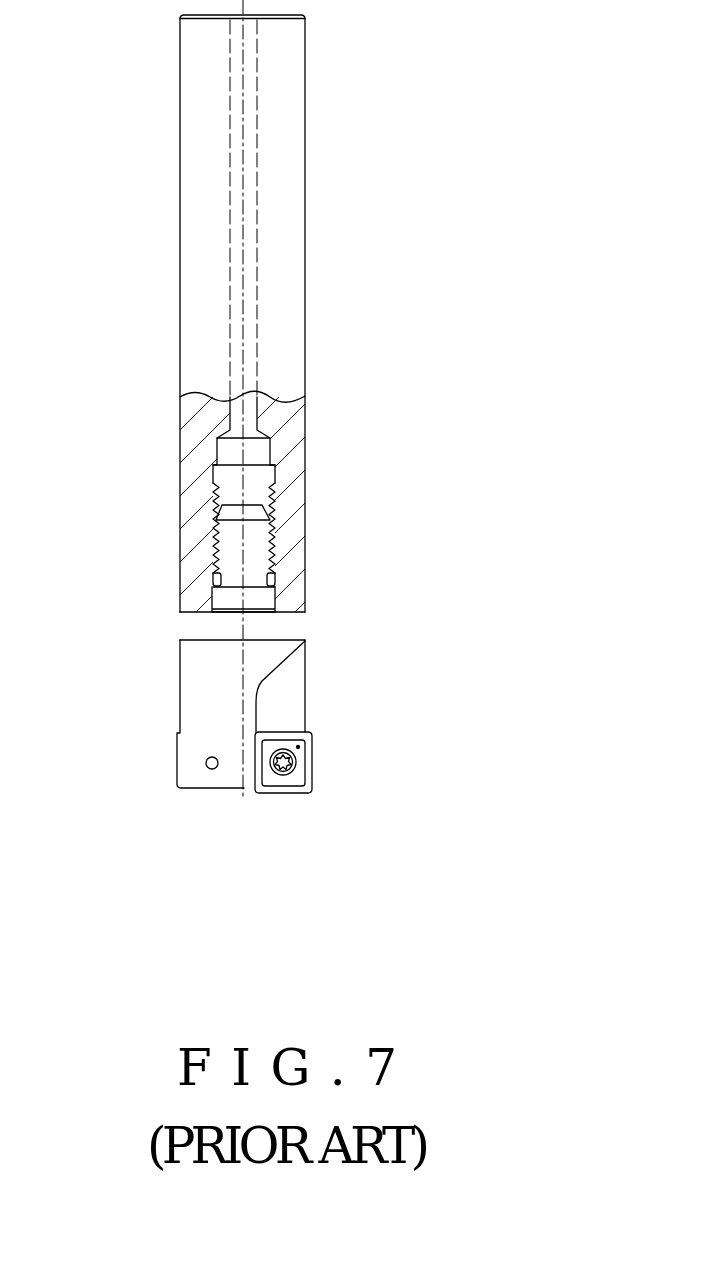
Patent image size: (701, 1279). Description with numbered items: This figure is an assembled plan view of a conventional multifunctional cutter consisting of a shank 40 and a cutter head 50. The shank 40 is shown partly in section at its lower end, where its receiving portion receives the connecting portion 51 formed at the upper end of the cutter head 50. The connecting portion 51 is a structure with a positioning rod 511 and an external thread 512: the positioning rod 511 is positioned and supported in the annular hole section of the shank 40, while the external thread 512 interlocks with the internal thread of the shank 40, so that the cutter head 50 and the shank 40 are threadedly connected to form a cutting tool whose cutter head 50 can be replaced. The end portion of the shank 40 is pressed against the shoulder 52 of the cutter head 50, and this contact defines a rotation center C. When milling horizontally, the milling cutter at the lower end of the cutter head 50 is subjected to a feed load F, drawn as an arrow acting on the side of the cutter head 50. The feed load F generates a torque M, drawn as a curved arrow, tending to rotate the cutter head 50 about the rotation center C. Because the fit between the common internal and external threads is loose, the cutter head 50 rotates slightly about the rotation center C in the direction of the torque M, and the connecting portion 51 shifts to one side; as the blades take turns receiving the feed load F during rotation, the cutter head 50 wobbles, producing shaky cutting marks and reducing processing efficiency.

The shank 40 is at (287, 291).
The cutter head 50 is at (195, 702).
The connecting portion 51 is at (145, 504).
The positioning rod 511 is at (214, 597).
The external thread 512 is at (217, 533).
The shoulder 52 is at (276, 612).
The rotation center C is at (262, 626).
The torque M is at (414, 566).
The feed load F is at (156, 792).